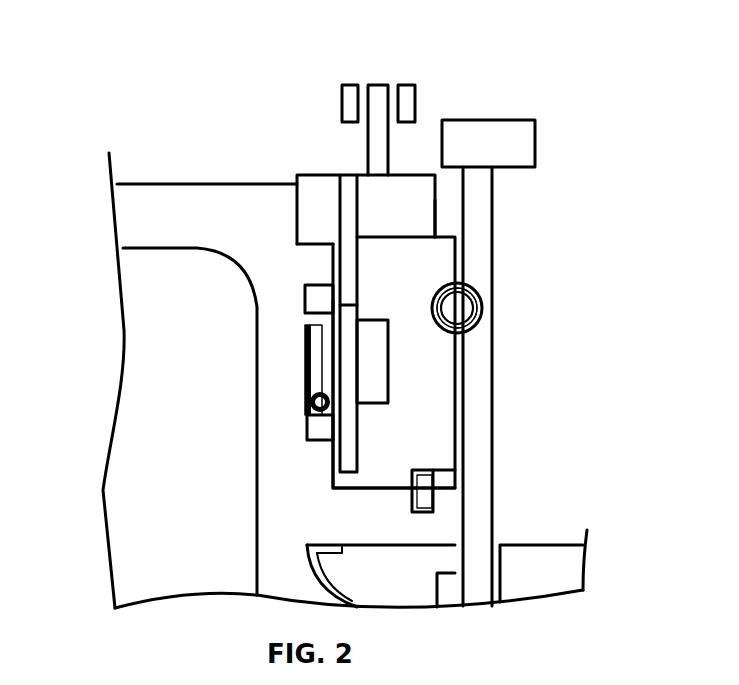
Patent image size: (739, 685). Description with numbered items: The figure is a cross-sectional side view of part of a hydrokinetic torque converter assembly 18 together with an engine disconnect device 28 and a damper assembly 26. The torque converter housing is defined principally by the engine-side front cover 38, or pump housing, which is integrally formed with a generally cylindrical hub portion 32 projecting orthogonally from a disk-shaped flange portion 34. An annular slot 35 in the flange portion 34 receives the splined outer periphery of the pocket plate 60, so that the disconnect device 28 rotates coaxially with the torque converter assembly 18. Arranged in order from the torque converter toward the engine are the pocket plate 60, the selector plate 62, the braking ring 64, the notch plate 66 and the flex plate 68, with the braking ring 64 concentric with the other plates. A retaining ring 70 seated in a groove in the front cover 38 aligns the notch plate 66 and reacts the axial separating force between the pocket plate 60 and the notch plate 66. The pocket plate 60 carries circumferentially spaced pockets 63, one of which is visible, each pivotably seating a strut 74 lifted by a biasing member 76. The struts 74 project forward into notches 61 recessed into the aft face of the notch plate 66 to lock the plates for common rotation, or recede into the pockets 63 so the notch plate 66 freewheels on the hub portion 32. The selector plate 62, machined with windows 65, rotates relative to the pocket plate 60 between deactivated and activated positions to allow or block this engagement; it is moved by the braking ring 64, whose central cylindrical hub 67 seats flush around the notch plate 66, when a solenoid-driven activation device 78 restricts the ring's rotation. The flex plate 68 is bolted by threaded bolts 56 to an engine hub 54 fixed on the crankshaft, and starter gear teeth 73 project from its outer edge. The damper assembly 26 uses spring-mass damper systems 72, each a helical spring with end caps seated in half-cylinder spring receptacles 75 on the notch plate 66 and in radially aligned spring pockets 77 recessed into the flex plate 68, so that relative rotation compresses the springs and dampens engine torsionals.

The torque converter assembly 18 is at (138, 113).
The damper assembly 26 is at (608, 290).
The engine disconnect device 28 is at (303, 108).
The hub portion 32 is at (443, 515).
The flange portion 34 is at (258, 198).
The annular slot 35 is at (313, 300).
The front cover 38 is at (190, 184).
The engine hub 54 is at (570, 570).
The threaded bolts 56 is at (443, 598).
The pocket plate 60 is at (318, 427).
The notches 61 is at (385, 343).
The selector plate 62 is at (340, 463).
The pockets 63 is at (307, 348).
The braking ring 64 is at (366, 133).
The windows 65 is at (347, 420).
The notch plate 66 is at (428, 437).
The cylindrical hub 67 is at (422, 172).
The flex plate 68 is at (492, 255).
The retaining ring 70 is at (413, 498).
The spring-mass damper systems 72 is at (483, 296).
The gear teeth 73 is at (525, 120).
The strut 74 is at (313, 373).
The spring receptacles 75 is at (437, 280).
The biasing member 76 is at (307, 413).
The spring pockets 77 is at (467, 332).
The activation device 78 is at (408, 85).